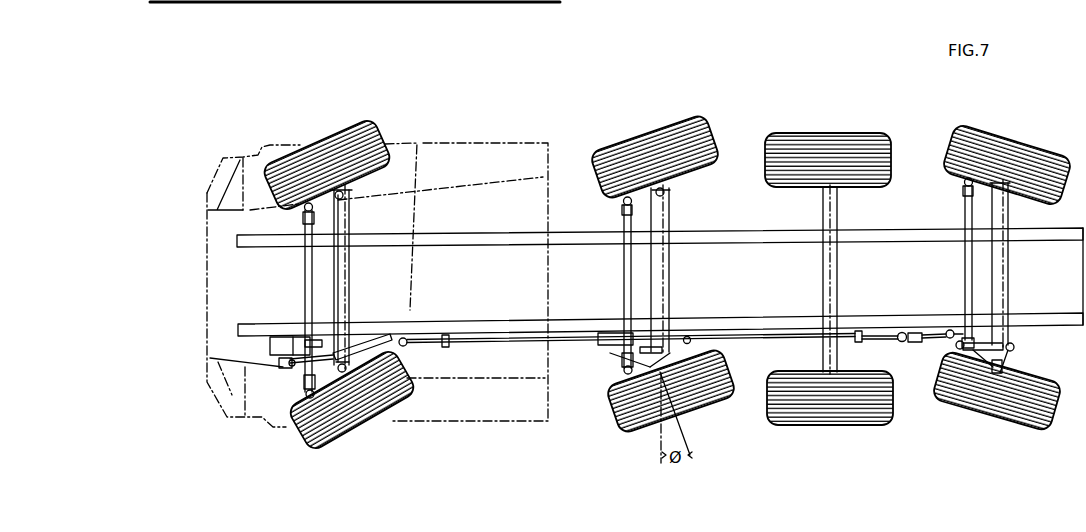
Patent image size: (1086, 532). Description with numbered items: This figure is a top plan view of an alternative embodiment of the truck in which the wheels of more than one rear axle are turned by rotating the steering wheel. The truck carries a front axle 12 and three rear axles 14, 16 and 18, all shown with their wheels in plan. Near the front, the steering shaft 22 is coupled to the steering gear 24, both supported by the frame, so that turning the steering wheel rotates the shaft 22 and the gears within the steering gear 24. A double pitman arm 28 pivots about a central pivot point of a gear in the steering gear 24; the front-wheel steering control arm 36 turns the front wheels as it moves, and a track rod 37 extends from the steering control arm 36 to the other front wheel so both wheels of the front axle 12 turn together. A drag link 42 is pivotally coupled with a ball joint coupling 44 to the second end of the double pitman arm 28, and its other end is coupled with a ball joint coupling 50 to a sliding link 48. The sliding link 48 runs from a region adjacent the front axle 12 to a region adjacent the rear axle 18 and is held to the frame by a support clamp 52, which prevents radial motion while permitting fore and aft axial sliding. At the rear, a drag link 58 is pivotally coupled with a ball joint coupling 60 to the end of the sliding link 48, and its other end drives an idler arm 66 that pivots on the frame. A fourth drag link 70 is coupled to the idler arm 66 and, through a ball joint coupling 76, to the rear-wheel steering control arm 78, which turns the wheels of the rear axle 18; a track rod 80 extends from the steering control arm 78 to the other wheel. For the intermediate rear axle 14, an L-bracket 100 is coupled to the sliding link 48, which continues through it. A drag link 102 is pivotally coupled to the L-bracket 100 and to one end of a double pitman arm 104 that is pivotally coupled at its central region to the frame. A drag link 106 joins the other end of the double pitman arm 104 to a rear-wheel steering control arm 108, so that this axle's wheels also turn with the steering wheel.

The front axle 12 is at (350, 253).
The rear axle 14 is at (668, 262).
The rear axle 16 is at (837, 277).
The rear axle 18 is at (1003, 253).
The steering shaft 22 is at (338, 303).
The steering gear 24 is at (270, 347).
The double pitman arm 28 is at (283, 370).
The front-wheel steering control arm 36 is at (347, 372).
The track rod 37 is at (304, 253).
The drag link 42 is at (370, 342).
The ball joint coupling 44 is at (288, 357).
The sliding link 48 is at (612, 352).
The ball joint coupling 50 is at (412, 333).
The support clamp 52 is at (449, 347).
The drag link 58 is at (930, 333).
The ball joint coupling 60 is at (903, 333).
The idler arm 66 is at (950, 340).
The fourth drag link 70 is at (993, 343).
The ball joint coupling 76 is at (1014, 347).
The rear-wheel steering control arm 78 is at (1012, 360).
The track rod 80 is at (965, 263).
The L-bracket 100 is at (598, 343).
The drag link 102 is at (610, 353).
The double pitman arm 104 is at (630, 352).
The drag link 106 is at (612, 395).
The rear-wheel steering control arm 108 is at (687, 336).